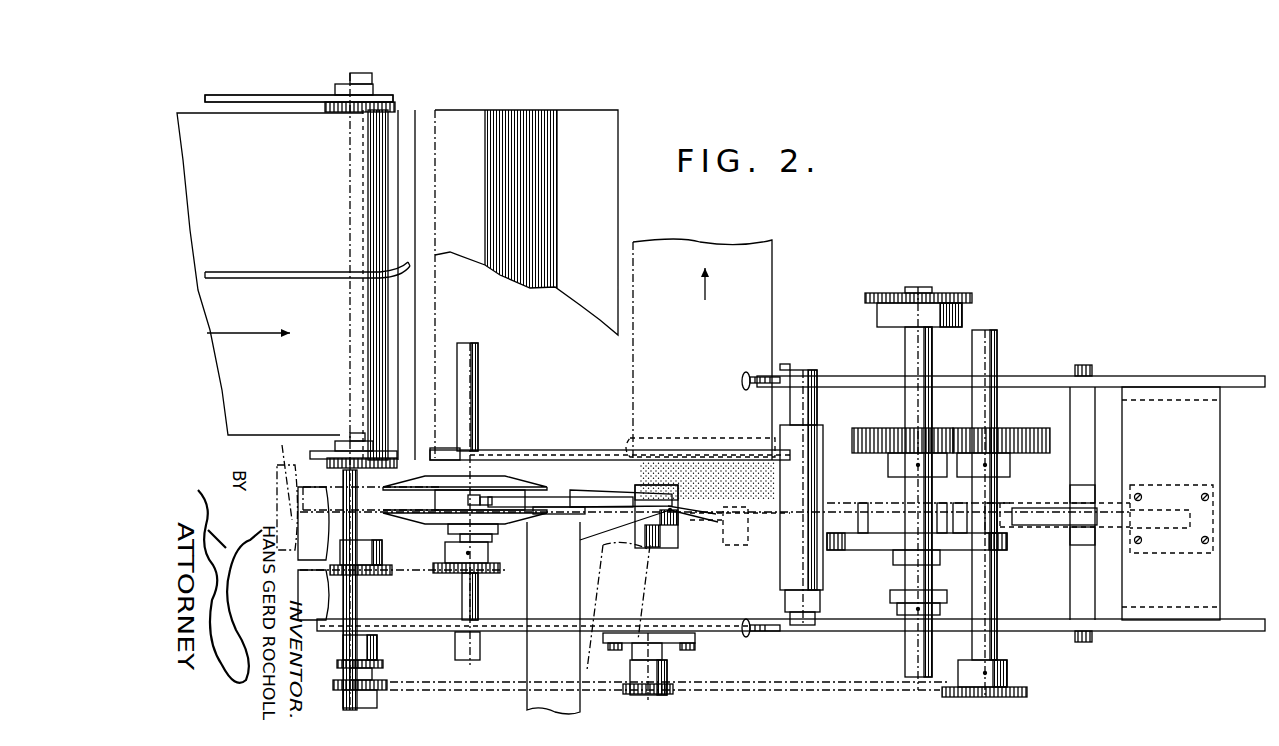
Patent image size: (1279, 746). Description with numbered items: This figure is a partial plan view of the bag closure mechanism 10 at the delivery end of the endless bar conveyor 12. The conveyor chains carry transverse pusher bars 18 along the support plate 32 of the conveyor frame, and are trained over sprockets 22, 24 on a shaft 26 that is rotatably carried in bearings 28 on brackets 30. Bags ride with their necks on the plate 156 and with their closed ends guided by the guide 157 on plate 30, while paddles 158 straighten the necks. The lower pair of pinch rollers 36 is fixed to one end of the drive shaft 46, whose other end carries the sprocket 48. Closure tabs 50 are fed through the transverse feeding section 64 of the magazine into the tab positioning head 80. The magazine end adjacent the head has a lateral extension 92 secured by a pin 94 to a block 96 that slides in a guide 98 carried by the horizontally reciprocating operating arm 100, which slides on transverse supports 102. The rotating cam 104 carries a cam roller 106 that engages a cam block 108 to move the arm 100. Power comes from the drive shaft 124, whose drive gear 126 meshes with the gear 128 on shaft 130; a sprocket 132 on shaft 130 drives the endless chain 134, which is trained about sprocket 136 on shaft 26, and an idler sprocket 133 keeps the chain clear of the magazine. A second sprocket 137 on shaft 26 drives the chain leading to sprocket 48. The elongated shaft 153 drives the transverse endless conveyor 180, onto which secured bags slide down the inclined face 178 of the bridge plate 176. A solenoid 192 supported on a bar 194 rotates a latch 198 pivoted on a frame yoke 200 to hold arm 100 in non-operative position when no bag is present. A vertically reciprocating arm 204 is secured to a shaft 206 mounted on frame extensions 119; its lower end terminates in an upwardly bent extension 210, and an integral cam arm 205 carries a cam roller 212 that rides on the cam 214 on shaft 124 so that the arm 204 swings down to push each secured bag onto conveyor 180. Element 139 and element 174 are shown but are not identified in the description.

The closure mechanism 10 is at (243, 80).
The endless bar conveyor 12 is at (430, 106).
The pusher bars 18 is at (400, 118).
The sprocket 22 is at (333, 468).
The sprocket 24 is at (395, 102).
The shaft 26 is at (359, 74).
The bearings 28 is at (337, 88).
The brackets 30 is at (207, 98).
The support plate 32 is at (205, 310).
The lower pair of pinch rollers 36 is at (428, 512).
The drive shaft 46 is at (465, 343).
The sprocket 48 is at (465, 558).
The tabs 50 is at (484, 498).
The transverse feeding section 64 is at (566, 596).
The tab positioning head 80 is at (545, 498).
The lateral extension 92 is at (612, 531).
The pin 94 is at (675, 532).
The block 96 is at (658, 548).
The guide 98 is at (680, 548).
The operating arm 100 is at (772, 530).
The transverse supports 102 is at (790, 484).
The cam 104 is at (893, 542).
The cam roller 106 is at (853, 515).
The cam block 108 is at (960, 520).
The extensions of the main machine frame 119 is at (1015, 384).
The drive shaft 124 is at (905, 345).
The drive gear 126 is at (890, 432).
The cooperating gear 128 is at (1005, 432).
The shaft 130 is at (980, 335).
The sprocket 132 is at (1025, 691).
The idler sprocket 133 is at (663, 692).
The endless chain 134 is at (875, 692).
The sprocket 136 is at (385, 692).
The second sprocket 137 is at (368, 553).
The gear 139 is at (383, 665).
The elongated shaft 153 is at (660, 438).
The plate 156 is at (330, 530).
The guide 157 is at (268, 272).
The paddles 158 is at (282, 445).
The pin 174 is at (468, 495).
The bridge plate 176 is at (462, 125).
The inclined face 178 is at (590, 122).
The transverse endless conveyor 180 is at (690, 337).
The solenoid 192 is at (1168, 484).
The bar 194 is at (1210, 437).
The latch 198 is at (1050, 518).
The frame yoke 200 is at (1090, 540).
The vertically reciprocating arm 204 is at (600, 452).
The cam arm 205 is at (826, 590).
The shaft 206 is at (797, 378).
The upwardly bent extension 210 is at (435, 453).
The cam roller 212 is at (925, 598).
The cam 214 is at (945, 609).